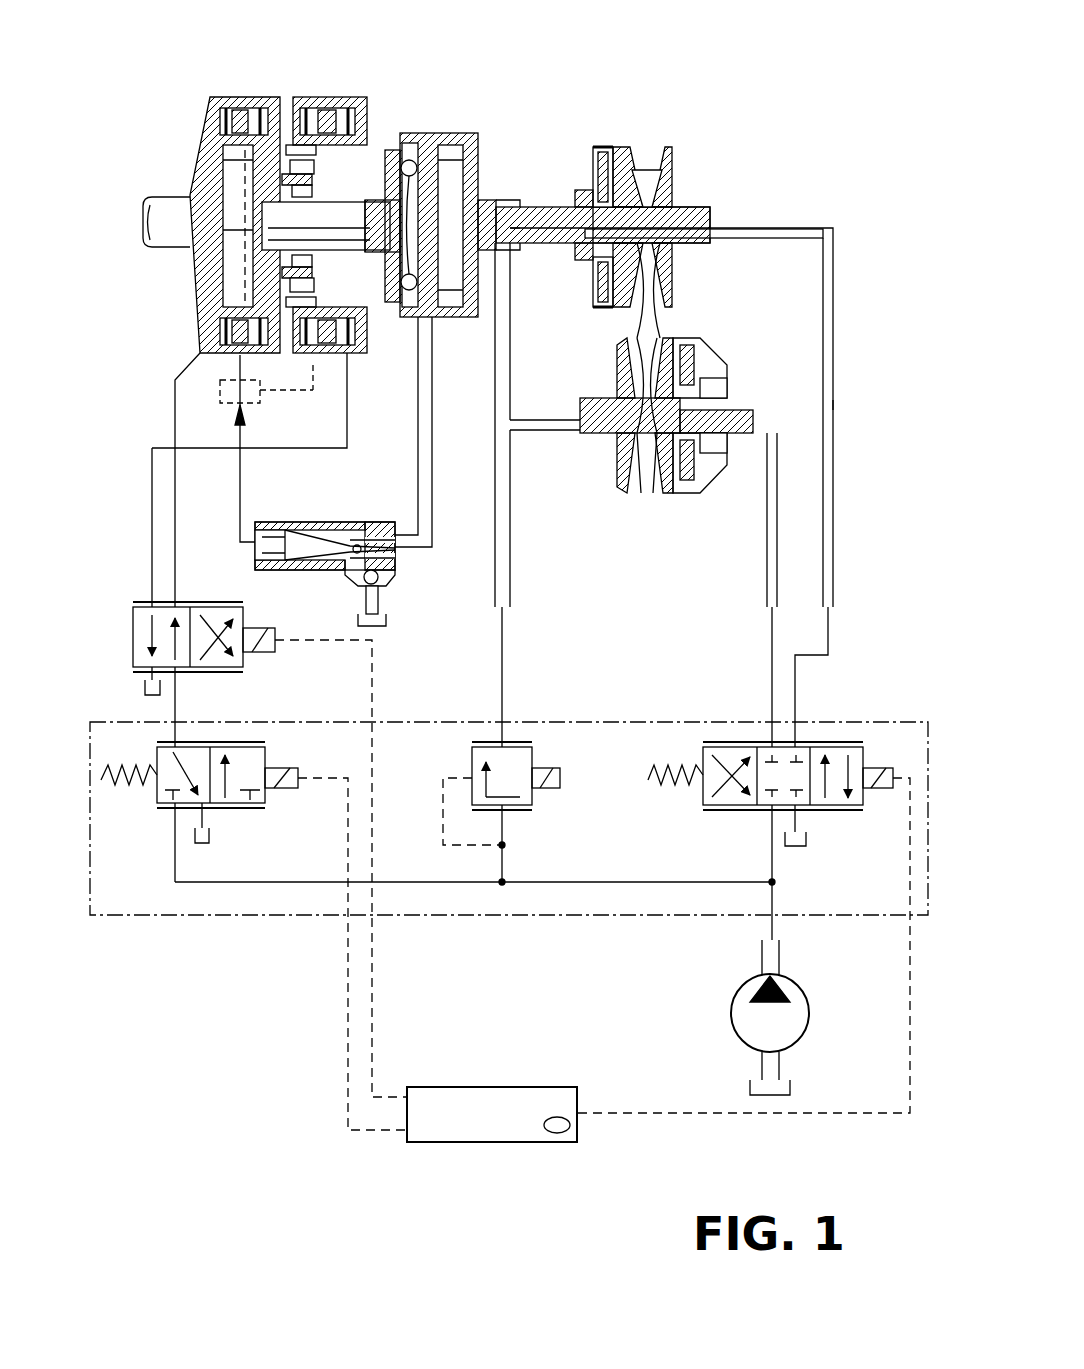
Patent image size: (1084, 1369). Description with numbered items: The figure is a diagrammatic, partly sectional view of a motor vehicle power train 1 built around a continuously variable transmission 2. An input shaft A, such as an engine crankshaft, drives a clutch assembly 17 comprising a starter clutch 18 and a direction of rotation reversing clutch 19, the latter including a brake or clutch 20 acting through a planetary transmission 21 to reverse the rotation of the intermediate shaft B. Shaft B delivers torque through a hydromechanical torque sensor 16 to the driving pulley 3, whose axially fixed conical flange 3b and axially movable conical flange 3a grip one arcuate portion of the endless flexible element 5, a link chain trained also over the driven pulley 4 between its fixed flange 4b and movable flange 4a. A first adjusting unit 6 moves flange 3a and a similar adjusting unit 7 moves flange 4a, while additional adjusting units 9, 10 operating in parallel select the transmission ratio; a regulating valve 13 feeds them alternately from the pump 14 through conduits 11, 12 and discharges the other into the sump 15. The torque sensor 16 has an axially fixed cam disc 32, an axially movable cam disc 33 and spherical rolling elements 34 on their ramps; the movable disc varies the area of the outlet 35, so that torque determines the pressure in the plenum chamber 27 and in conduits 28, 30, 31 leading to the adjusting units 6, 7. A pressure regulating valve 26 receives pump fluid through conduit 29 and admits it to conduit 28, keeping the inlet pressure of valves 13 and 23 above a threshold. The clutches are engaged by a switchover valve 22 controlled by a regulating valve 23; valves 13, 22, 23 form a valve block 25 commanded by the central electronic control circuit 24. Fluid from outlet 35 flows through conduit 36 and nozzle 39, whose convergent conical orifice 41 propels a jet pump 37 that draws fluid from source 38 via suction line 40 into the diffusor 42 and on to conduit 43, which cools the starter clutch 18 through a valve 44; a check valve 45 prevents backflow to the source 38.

The power train 1 is at (647, 98).
The continuously variable transmission 2 is at (718, 118).
The driving pulley 3 is at (662, 205).
The axially movable conical flange 3a is at (620, 145).
The axially fixed conical flange 3b is at (670, 163).
The driven pulley 4 is at (623, 450).
The axially movable conical flange 4a is at (660, 493).
The axially fixed conical flange 4b is at (620, 493).
The endless flexible element 5 is at (647, 167).
The first adjusting unit 6 is at (600, 150).
The adjusting unit 7 is at (685, 340).
The additional adjusting unit 9 is at (584, 195).
The additional adjusting unit 10 is at (727, 390).
The conduit 11 is at (833, 405).
The conduit 12 is at (772, 530).
The regulating valve 13 is at (833, 745).
The pump 14 is at (750, 1020).
The sump 15 is at (800, 822).
The hydromechanical torque sensor 16 is at (441, 115).
The clutch assembly 17 is at (286, 88).
The starter clutch 18 is at (240, 97).
The direction of rotation reversing clutch 19 is at (345, 97).
The brake or clutch 20 is at (318, 97).
The planetary transmission 21 is at (305, 286).
The switchover valve 22 is at (215, 625).
The regulating valve 23 is at (240, 800).
The central electronic control circuit 24 is at (477, 1125).
The valve block 25 is at (243, 916).
The pressure regulating valve 26 is at (520, 765).
The plenum chamber 27 is at (462, 133).
The conduit 28 is at (503, 573).
The conduit 29 is at (562, 882).
The conduit 30 is at (528, 207).
The conduit 31 is at (545, 420).
The axially fixed cam disc 32 is at (387, 305).
The axially movable cam disc 33 is at (430, 315).
The spherical rolling elements 34 is at (407, 133).
The outlet 35 is at (417, 318).
The conduit 36 is at (432, 430).
The jet pump 37 is at (310, 572).
The source 38 is at (382, 628).
The nozzle 39 is at (372, 538).
The suction line 40 is at (380, 599).
The convergent conical orifice 41 is at (357, 540).
The diffusor 42 is at (297, 545).
The conduit 43 is at (247, 535).
The valve 44 is at (262, 405).
The check valve 45 is at (380, 578).
The input shaft A is at (172, 215).
The intermediate shaft B is at (345, 208).